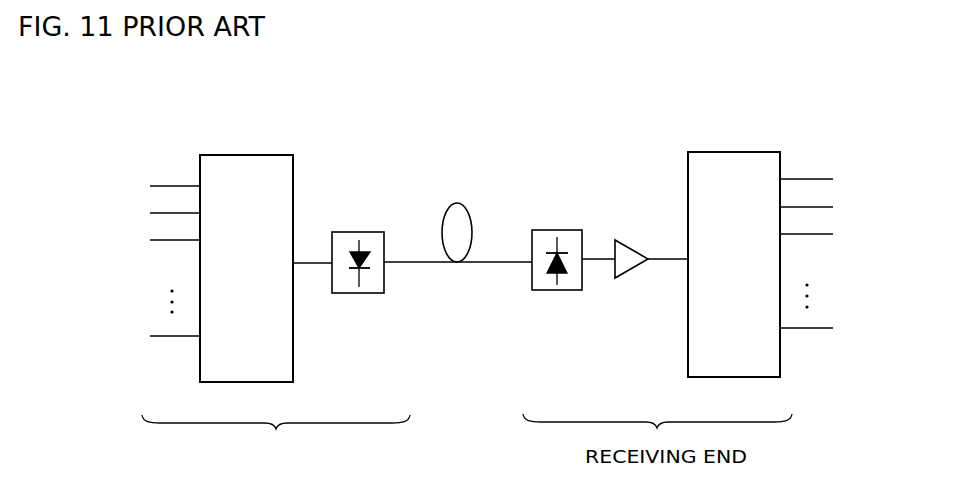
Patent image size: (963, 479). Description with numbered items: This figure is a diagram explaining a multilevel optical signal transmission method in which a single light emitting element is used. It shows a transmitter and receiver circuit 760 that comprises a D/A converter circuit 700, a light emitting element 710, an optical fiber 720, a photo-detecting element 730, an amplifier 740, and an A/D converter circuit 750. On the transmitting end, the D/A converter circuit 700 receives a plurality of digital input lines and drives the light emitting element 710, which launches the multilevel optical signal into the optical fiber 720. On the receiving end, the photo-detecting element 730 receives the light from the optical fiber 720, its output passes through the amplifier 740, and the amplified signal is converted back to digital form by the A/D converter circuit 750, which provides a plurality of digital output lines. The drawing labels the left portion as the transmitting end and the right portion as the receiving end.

The transmitter and receiver circuit 760 is at (203, 108).
The D/A converter circuit 700 is at (275, 155).
The light emitting element 710 is at (372, 232).
The optical fiber 720 is at (456, 264).
The photo-detecting element 730 is at (571, 230).
The amplifier 740 is at (628, 275).
The A/D converter circuit 750 is at (758, 152).